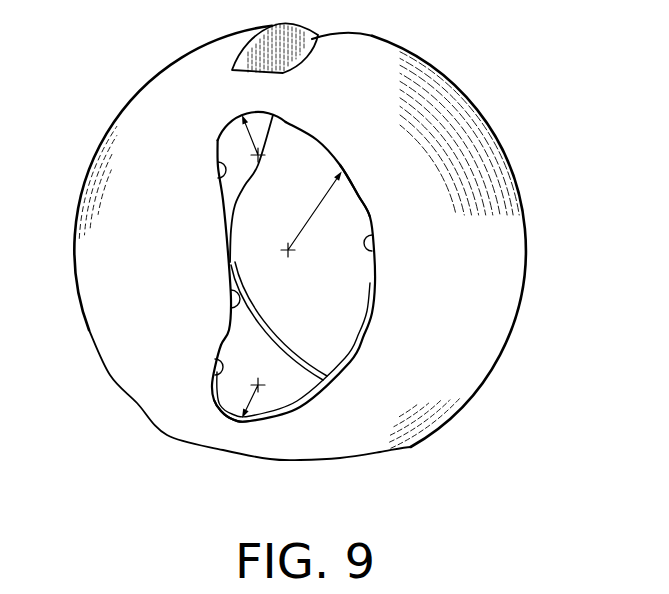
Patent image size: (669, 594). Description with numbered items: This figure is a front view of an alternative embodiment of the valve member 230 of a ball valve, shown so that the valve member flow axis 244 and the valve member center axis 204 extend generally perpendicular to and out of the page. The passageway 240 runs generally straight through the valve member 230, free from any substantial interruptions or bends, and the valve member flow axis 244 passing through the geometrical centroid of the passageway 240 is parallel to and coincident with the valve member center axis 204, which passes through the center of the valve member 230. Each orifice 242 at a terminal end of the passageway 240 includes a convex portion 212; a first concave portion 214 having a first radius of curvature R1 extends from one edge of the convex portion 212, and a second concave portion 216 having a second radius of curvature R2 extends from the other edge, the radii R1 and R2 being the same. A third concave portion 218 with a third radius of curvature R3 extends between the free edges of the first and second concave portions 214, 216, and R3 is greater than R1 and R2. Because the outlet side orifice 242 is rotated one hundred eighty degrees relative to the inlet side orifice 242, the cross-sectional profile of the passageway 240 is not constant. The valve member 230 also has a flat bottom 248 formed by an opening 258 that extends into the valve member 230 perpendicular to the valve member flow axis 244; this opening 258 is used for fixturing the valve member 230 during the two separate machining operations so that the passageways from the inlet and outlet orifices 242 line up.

The valve member 230 is at (505, 87).
The opening 258 is at (382, 453).
The valve member center axis 204 is at (288, 250).
The passageway 240 is at (245, 338).
The valve member flow axis 244 is at (288, 250).
The orifice 242 is at (368, 220).
The third concave portion 218 is at (364, 260).
The first concave portion 214 is at (223, 182).
The convex portion 212 is at (226, 314).
The second concave portion 216 is at (220, 363).
The flat bottom 248 is at (248, 484).
The first radius of curvature R1 is at (253, 148).
The second radius of curvature R2 is at (253, 390).
The third radius of curvature R3 is at (328, 208).